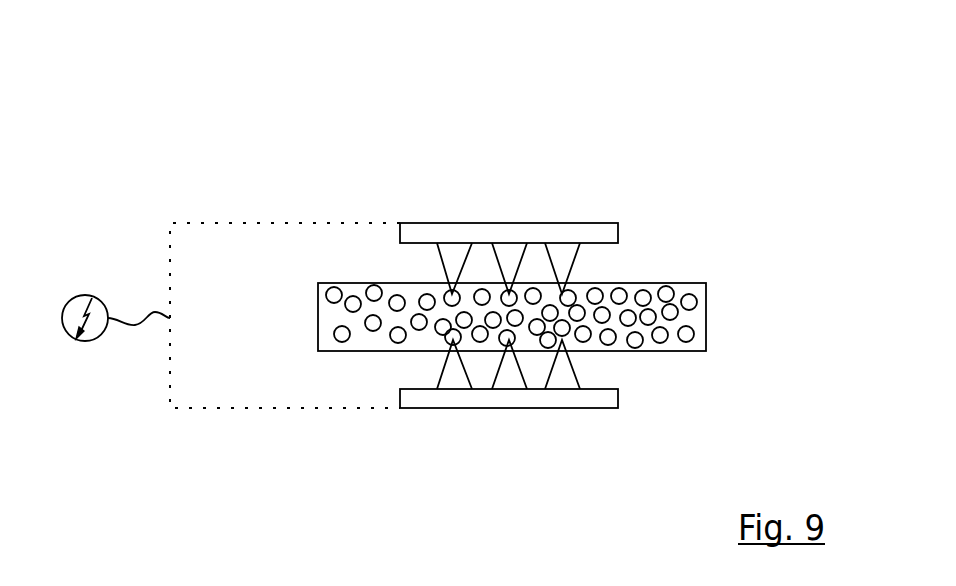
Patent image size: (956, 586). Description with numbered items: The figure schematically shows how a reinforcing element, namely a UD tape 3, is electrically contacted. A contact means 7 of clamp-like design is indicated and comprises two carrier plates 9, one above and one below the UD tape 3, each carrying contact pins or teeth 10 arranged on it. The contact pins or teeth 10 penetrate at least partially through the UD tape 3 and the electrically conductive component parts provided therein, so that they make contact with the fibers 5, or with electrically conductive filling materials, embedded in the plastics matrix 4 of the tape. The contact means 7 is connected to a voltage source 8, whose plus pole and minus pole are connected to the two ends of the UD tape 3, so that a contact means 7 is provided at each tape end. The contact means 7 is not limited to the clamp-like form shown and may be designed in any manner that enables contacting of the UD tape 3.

The UD tape 3 is at (574, 286).
The plastics matrix 4 is at (673, 342).
The fibers 5 is at (663, 295).
The contact means 7 is at (248, 223).
The voltage source 8 is at (77, 294).
The carrier plates 9 is at (478, 235).
The contact pins or teeth 10 is at (563, 257).